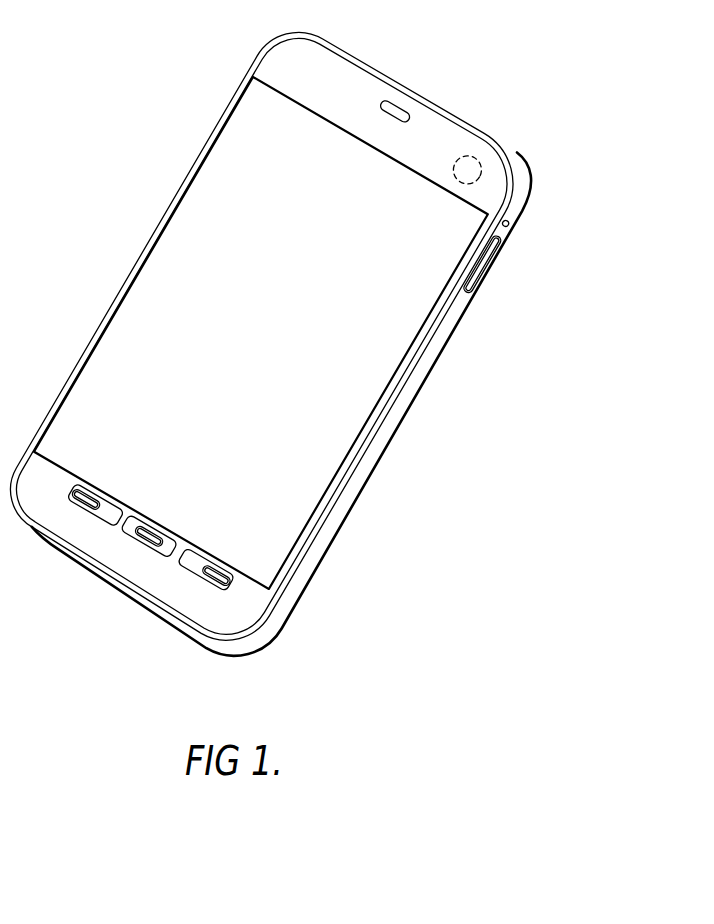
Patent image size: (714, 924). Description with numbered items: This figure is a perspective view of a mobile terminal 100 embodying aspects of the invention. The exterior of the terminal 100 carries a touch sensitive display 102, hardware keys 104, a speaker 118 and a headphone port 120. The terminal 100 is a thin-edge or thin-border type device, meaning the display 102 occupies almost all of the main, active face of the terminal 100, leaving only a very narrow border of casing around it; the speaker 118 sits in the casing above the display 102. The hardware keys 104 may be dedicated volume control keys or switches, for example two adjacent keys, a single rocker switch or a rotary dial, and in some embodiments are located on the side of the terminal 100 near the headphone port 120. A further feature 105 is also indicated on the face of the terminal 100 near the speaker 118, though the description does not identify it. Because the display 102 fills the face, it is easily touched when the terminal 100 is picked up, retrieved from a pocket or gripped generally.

The terminal 100 is at (107, 153).
The touch sensitive display 102 is at (372, 417).
The hardware keys 104 is at (167, 552).
The camera 105 is at (480, 161).
The speaker 118 is at (398, 101).
The headphone port 120 is at (510, 225).